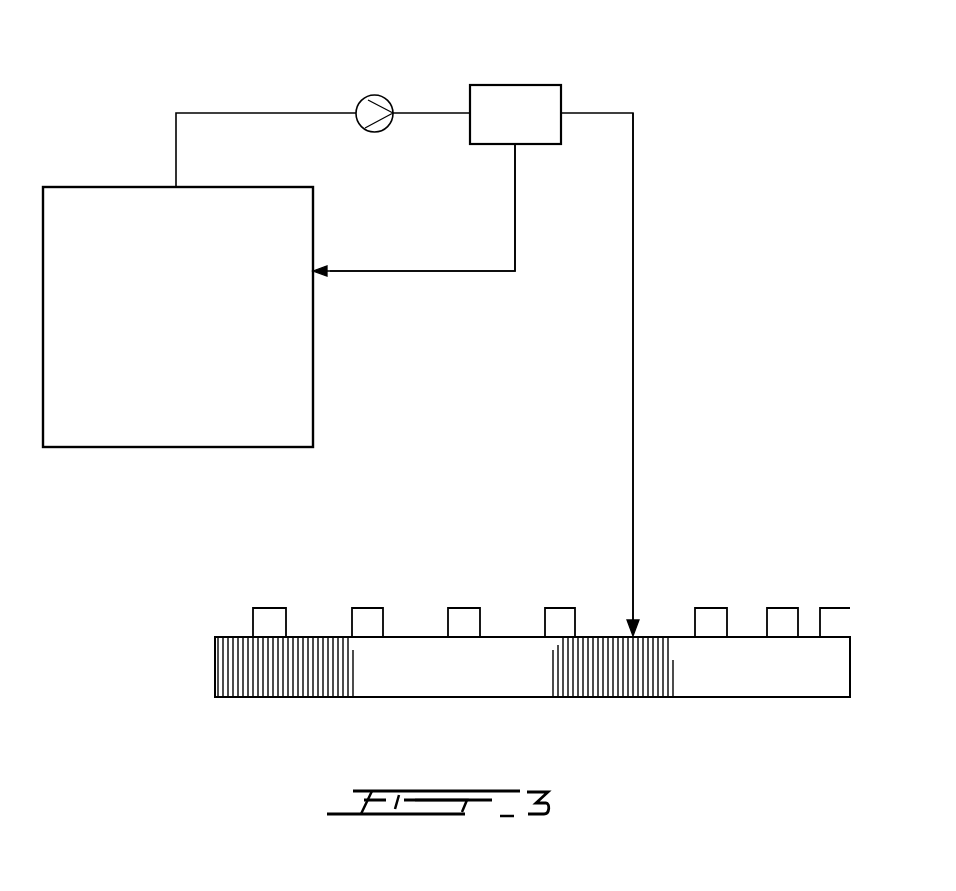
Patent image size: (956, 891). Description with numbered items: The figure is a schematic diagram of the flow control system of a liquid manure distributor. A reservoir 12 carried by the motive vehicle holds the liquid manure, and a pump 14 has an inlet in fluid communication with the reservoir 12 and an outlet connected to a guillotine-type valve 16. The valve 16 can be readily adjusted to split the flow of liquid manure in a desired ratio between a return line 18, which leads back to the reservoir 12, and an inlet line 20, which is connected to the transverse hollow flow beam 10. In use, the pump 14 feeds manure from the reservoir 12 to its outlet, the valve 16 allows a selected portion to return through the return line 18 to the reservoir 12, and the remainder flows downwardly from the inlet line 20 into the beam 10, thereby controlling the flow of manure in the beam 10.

The hollow flow beam 10 is at (200, 666).
The reservoir 12 is at (117, 425).
The pump 14 is at (373, 95).
The guillotine-type valve 16 is at (530, 85).
The return line 18 is at (458, 271).
The inlet line 20 is at (633, 512).